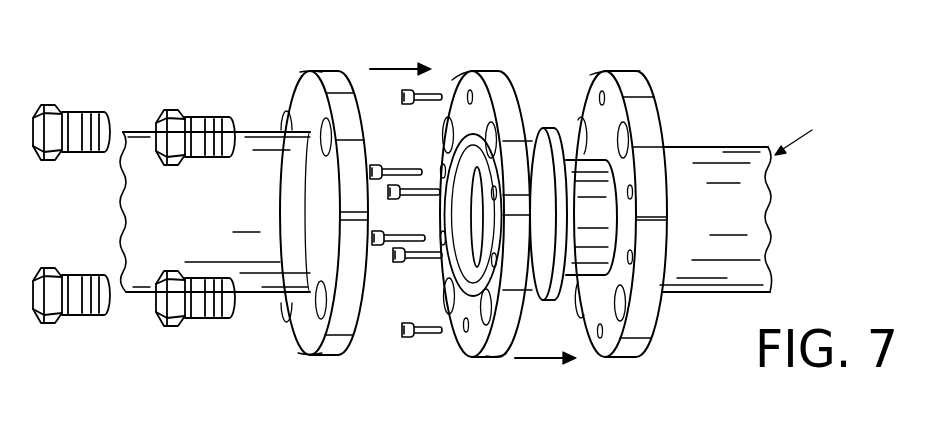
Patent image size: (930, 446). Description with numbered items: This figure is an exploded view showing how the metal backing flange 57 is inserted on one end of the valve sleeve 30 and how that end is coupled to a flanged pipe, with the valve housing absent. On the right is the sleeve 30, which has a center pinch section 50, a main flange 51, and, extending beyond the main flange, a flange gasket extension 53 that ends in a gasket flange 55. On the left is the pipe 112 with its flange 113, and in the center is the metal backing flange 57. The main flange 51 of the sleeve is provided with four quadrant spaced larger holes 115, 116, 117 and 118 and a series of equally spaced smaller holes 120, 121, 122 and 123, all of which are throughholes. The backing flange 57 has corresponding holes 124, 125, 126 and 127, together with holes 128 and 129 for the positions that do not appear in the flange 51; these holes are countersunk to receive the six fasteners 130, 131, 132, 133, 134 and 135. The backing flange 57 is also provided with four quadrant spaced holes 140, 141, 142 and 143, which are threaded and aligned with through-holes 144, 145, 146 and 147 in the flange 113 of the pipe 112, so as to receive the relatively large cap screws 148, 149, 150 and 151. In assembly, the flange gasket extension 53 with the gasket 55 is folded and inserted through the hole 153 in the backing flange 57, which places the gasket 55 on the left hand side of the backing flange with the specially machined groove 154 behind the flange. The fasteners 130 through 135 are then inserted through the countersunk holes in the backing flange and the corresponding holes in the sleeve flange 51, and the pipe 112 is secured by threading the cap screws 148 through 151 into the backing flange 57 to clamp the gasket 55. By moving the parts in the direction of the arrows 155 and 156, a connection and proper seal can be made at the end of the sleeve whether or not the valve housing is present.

The sleeve 30 is at (808, 136).
The center pinch section 50 is at (730, 146).
The main flange 51 is at (625, 68).
The flange gasket extension 53 is at (650, 228).
The gasket flange 55 is at (544, 125).
The metal backing flange 57 is at (500, 222).
The pipe 112 is at (245, 275).
The flange 113 is at (306, 238).
The larger hole 115 is at (598, 73).
The larger hole 116 is at (629, 140).
The larger hole 117 is at (626, 302).
The larger hole 118 is at (642, 212).
The smaller hole 120 is at (606, 97).
The smaller hole 121 is at (634, 190).
The smaller hole 122 is at (634, 257).
The smaller hole 123 is at (603, 338).
The hole 124 is at (470, 88).
The hole 125 is at (484, 195).
The hole 126 is at (497, 265).
The hole 127 is at (465, 334).
The hole 128 is at (440, 233).
The hole 129 is at (440, 165).
The fastener 130 is at (428, 106).
The fastener 131 is at (420, 334).
The fastener 132 is at (393, 259).
The fastener 133 is at (372, 243).
The fastener 134 is at (388, 196).
The fastener 135 is at (370, 177).
The quadrant spaced hole 140 is at (457, 80).
The quadrant spaced hole 141 is at (497, 137).
The quadrant spaced hole 142 is at (470, 362).
The quadrant spaced hole 143 is at (444, 306).
The through-hole 144 is at (288, 117).
The through-hole 145 is at (303, 74).
The through-hole 146 is at (306, 358).
The through-hole 147 is at (288, 320).
The cap screw 148 is at (77, 113).
The cap screw 149 is at (197, 117).
The cap screw 150 is at (208, 318).
The cap screw 151 is at (80, 317).
The hole 153 is at (478, 172).
The machined groove 154 is at (454, 133).
The arrow 155 is at (541, 366).
The arrow 156 is at (393, 63).